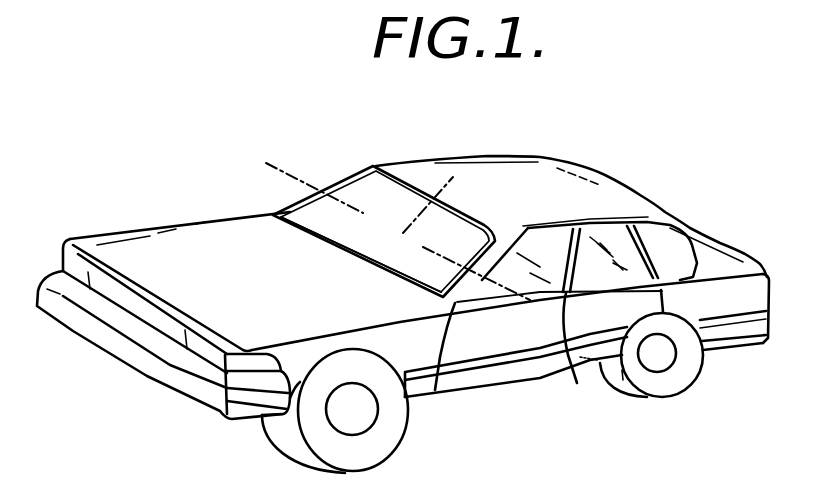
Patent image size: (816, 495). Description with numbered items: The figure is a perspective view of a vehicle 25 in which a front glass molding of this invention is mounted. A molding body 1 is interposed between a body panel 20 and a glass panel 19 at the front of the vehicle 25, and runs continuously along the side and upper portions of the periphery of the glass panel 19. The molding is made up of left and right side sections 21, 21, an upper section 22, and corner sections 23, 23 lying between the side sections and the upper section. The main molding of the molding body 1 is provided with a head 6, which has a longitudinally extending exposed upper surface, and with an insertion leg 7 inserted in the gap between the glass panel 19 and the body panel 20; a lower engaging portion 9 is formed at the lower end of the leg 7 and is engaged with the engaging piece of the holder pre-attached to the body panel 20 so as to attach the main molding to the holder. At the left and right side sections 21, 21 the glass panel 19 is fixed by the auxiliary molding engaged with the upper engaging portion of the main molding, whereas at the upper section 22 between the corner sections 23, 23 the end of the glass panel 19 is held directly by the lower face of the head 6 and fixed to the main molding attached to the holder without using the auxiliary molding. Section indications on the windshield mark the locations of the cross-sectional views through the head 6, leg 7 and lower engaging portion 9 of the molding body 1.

The molding body 1 is at (375, 261).
The head 6 is at (434, 250).
The insertion leg 7 is at (453, 170).
The lower engaging portion 9 is at (271, 160).
The glass panel 19 is at (360, 241).
The body panel 20 is at (563, 352).
The side sections 21 is at (358, 175).
The upper section 22 is at (417, 202).
The corner sections 23 is at (482, 283).
The vehicle 25 is at (615, 203).